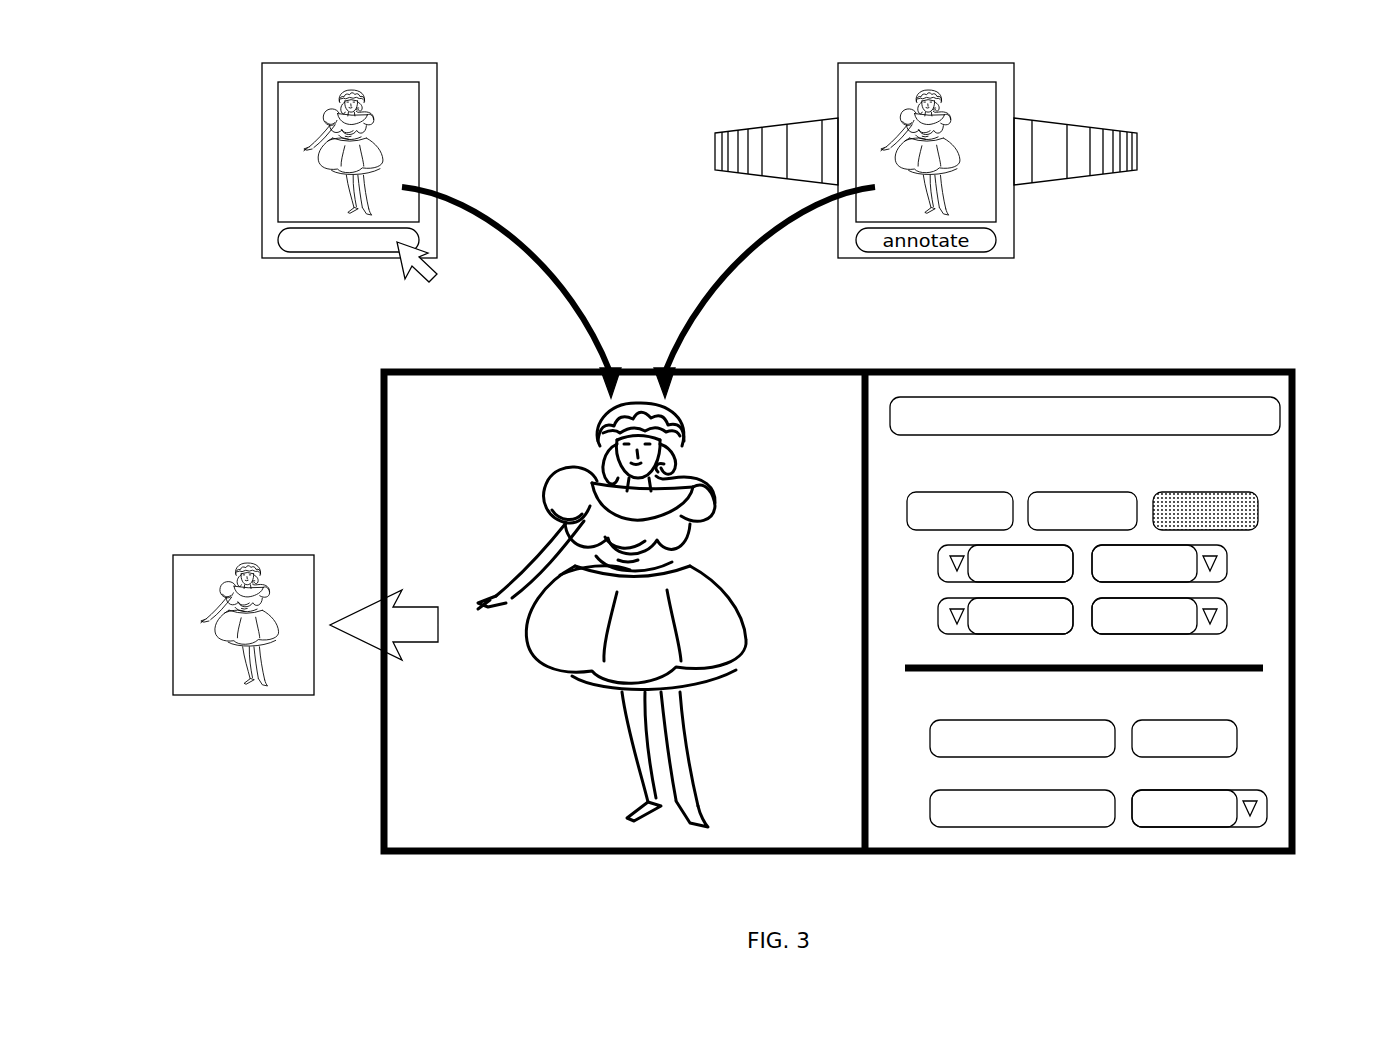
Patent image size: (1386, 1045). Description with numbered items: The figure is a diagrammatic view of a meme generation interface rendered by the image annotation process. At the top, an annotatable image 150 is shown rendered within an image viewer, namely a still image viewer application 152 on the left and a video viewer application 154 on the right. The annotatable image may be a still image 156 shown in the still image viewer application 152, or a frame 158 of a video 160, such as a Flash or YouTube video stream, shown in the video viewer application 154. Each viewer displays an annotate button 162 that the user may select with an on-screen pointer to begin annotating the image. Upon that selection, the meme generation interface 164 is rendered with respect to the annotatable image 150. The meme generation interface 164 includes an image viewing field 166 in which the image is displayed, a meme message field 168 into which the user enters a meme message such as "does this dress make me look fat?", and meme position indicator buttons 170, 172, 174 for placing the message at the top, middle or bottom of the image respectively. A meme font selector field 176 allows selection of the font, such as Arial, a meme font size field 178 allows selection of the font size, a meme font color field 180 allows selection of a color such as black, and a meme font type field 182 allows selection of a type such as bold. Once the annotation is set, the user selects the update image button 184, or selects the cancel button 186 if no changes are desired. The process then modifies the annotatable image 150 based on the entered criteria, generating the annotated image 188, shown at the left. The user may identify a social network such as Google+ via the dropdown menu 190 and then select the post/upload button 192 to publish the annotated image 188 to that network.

The annotatable image 150 is at (405, 440).
The still image viewer application 152 is at (265, 82).
The video viewer application 154 is at (1010, 82).
The still image 156 is at (297, 157).
The frame 158 is at (868, 112).
The video 160 is at (773, 147).
The annotate button 162 is at (277, 238).
The meme generation interface 164 is at (1286, 356).
The image viewing field 166 is at (745, 388).
The meme message field 168 is at (957, 400).
The meme position indicator button 170 is at (928, 507).
The meme position indicator button 172 is at (1040, 507).
The meme position indicator button 174 is at (1160, 507).
The meme font selector field 176 is at (945, 577).
The meme font size field 178 is at (1215, 548).
The meme font color field 180 is at (945, 627).
The meme font type field 182 is at (1215, 602).
The update image button 184 is at (947, 740).
The cancel button 186 is at (1140, 740).
The annotated image 188 is at (222, 563).
The dropdown menu 190 is at (1163, 828).
The post/upload button 192 is at (945, 828).